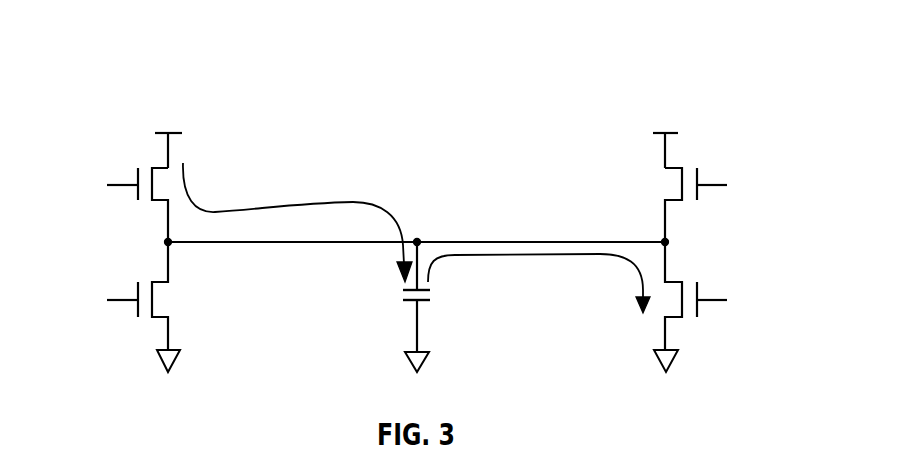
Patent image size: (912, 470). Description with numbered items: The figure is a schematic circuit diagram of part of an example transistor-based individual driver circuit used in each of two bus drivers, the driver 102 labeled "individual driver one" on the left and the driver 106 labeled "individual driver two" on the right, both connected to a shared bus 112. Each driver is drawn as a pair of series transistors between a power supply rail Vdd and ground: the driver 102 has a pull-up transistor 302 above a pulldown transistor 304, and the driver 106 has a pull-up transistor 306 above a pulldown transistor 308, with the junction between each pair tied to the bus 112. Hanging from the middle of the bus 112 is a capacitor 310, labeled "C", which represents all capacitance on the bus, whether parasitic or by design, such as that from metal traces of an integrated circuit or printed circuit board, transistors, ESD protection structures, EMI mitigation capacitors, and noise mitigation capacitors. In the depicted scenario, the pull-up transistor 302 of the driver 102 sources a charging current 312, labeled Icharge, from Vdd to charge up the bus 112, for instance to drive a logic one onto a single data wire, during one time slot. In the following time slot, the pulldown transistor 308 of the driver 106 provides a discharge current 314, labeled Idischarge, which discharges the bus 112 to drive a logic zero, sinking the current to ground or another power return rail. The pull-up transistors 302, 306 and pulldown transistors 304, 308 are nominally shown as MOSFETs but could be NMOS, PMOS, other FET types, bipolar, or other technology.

The driver 102 is at (206, 192).
The driver 106 is at (743, 192).
The bus 112 is at (465, 242).
The pull-up transistor 302 is at (162, 164).
The pulldown transistor 304 is at (162, 280).
The pull-up transistor 306 is at (672, 165).
The pulldown transistor 308 is at (672, 280).
The capacitor 310 is at (430, 300).
The charging current 312 is at (358, 202).
The discharge current 314 is at (572, 255).